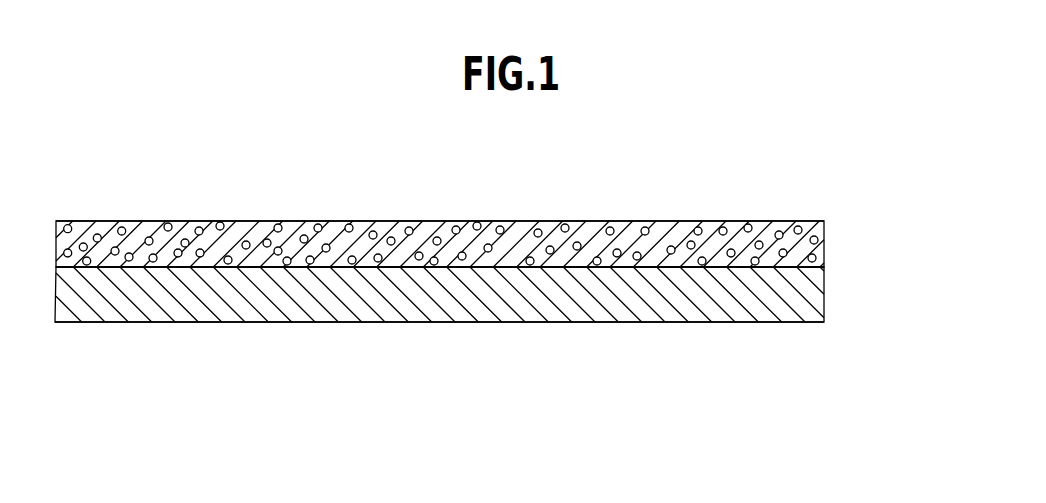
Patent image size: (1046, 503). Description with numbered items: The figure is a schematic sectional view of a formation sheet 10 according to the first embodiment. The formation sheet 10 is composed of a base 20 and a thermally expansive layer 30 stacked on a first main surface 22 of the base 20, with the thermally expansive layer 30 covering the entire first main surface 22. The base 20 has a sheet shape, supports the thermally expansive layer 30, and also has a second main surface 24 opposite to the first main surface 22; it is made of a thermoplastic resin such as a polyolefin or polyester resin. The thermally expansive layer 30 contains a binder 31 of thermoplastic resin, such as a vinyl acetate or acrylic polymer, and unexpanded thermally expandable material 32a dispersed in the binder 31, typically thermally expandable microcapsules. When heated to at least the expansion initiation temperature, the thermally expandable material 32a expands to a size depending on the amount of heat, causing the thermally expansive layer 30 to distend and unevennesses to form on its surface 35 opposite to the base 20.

The formation sheet 10 is at (771, 176).
The base 20 is at (825, 308).
The first main surface 22 is at (514, 267).
The second main surface 24 is at (412, 322).
The thermally expansive layer 30 is at (904, 215).
The binder 31 is at (825, 228).
The thermally expandable material 32a is at (825, 252).
The surface 35 is at (413, 219).